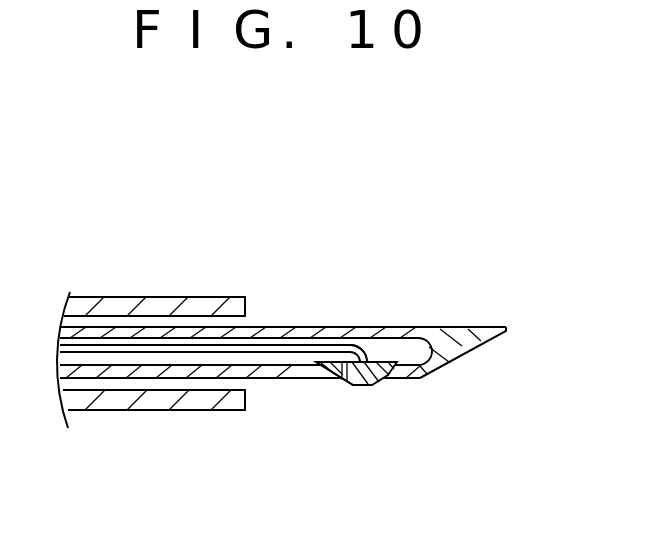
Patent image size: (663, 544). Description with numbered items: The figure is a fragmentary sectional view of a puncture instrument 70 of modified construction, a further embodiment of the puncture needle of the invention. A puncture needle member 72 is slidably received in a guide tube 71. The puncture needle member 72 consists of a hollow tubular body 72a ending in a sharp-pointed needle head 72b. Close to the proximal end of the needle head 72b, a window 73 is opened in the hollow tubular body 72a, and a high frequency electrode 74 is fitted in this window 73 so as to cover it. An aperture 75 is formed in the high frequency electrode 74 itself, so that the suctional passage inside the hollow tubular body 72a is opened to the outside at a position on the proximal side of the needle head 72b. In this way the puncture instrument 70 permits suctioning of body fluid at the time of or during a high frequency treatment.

The puncture instrument 70 is at (277, 304).
The guide tube 71 is at (168, 300).
The puncture needle member 72 is at (425, 325).
The hollow tubular body 72a is at (96, 340).
The sharp-pointed needle head 72b is at (478, 343).
The window 73 is at (388, 380).
The high frequency electrode 74 is at (383, 361).
The aperture 75 is at (343, 383).